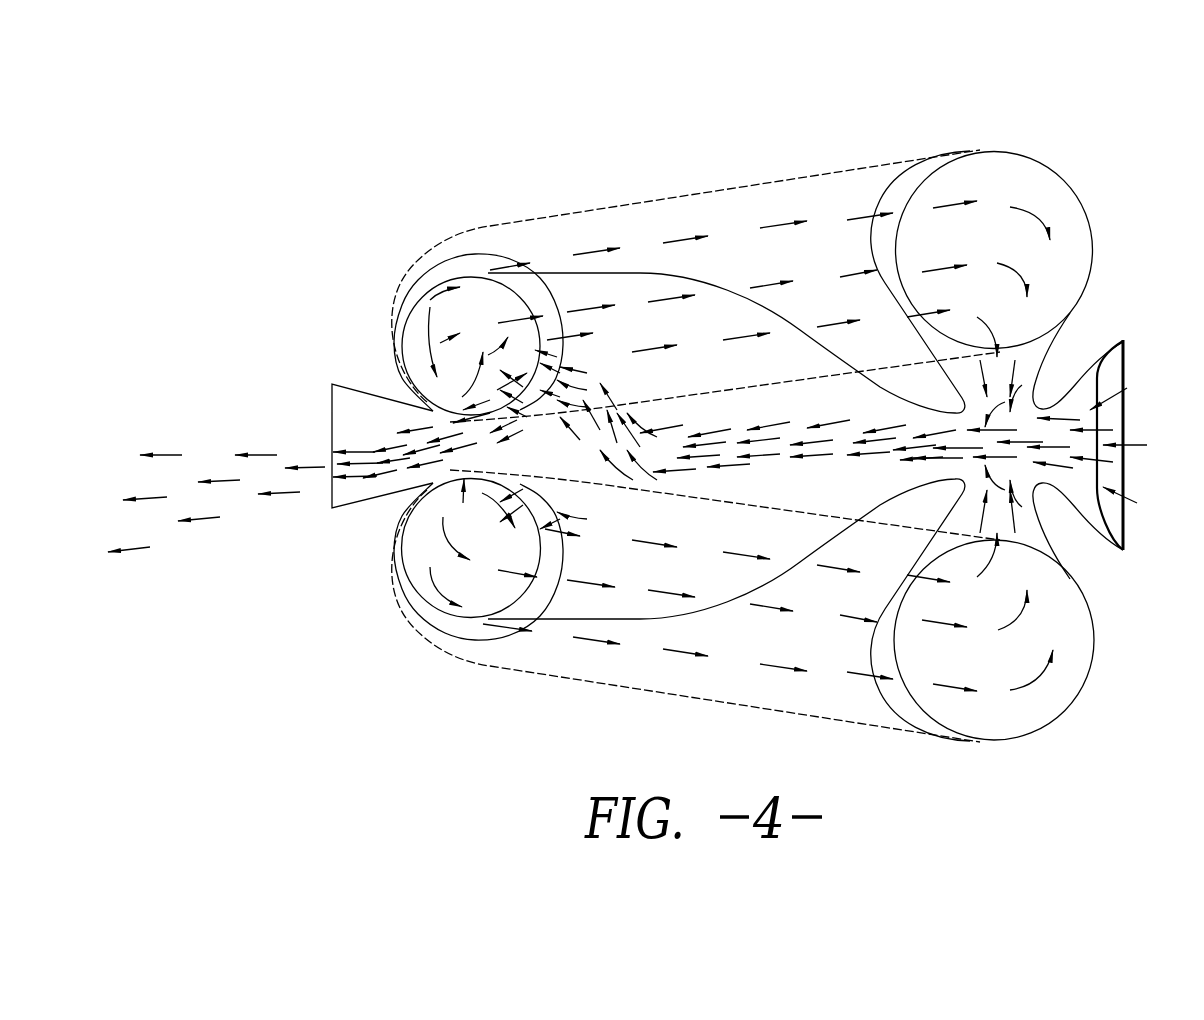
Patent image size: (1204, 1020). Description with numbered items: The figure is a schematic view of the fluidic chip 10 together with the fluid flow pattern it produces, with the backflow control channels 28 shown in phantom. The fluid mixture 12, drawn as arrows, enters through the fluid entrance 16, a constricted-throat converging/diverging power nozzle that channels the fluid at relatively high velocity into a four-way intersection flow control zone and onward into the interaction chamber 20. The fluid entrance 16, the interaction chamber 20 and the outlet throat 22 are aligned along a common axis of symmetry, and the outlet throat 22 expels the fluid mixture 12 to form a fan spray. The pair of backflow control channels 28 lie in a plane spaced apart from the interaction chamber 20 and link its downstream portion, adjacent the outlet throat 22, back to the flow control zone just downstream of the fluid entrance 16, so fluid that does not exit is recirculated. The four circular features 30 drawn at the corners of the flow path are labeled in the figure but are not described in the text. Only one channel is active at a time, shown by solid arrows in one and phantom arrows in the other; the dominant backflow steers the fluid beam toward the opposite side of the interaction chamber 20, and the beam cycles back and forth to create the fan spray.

The fluidic chip 10 is at (879, 116).
The fluid mixture 12 is at (1123, 473).
The fluid entrance 16 is at (1018, 362).
The interaction chamber 20 is at (555, 272).
The outlet throat 22 is at (333, 412).
The backflow control channels 28 is at (726, 186).
The rotating cylinders 30 is at (425, 338).